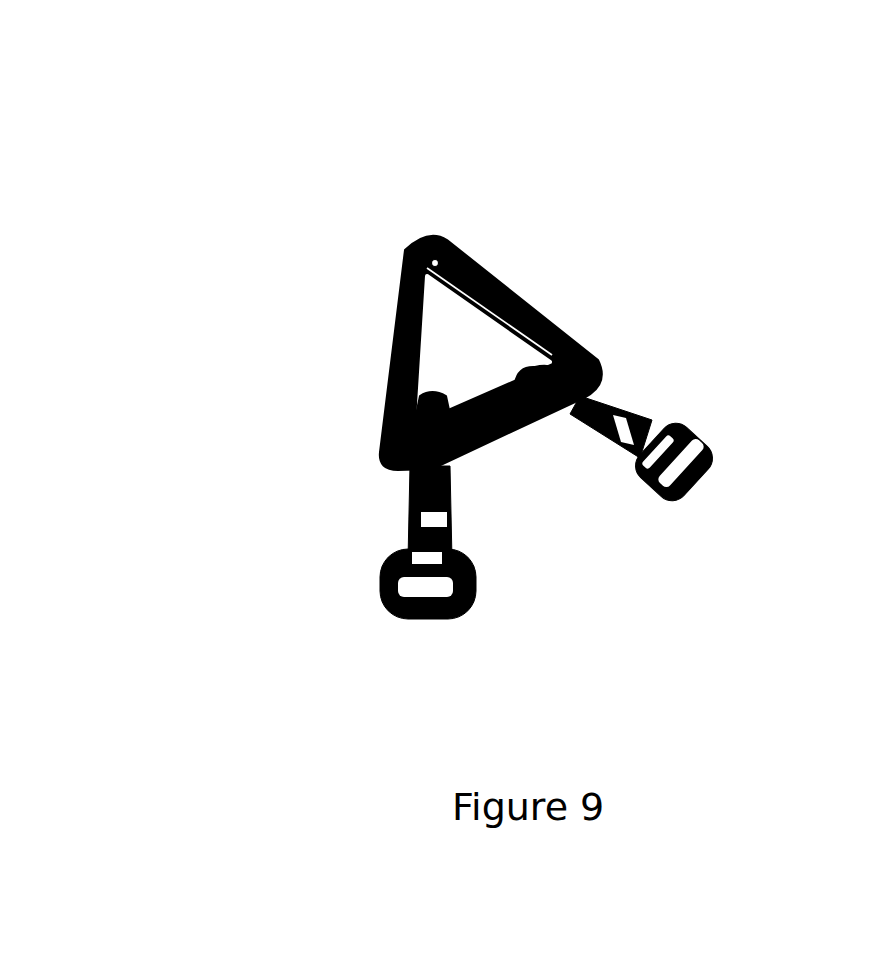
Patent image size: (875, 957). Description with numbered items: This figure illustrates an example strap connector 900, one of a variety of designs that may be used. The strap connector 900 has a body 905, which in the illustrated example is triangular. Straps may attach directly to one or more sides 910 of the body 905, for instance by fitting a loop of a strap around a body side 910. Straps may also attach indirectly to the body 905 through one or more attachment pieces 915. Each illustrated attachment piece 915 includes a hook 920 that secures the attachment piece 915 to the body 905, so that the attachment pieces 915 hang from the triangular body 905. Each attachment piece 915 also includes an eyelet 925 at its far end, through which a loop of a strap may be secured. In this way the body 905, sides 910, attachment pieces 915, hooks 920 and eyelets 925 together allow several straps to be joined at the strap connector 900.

The strap connector 900 is at (638, 129).
The body 905 is at (410, 243).
The sides 910 is at (388, 335).
The attachment pieces 915 is at (423, 512).
The hook 920 is at (410, 420).
The eyelet 925 is at (402, 607).